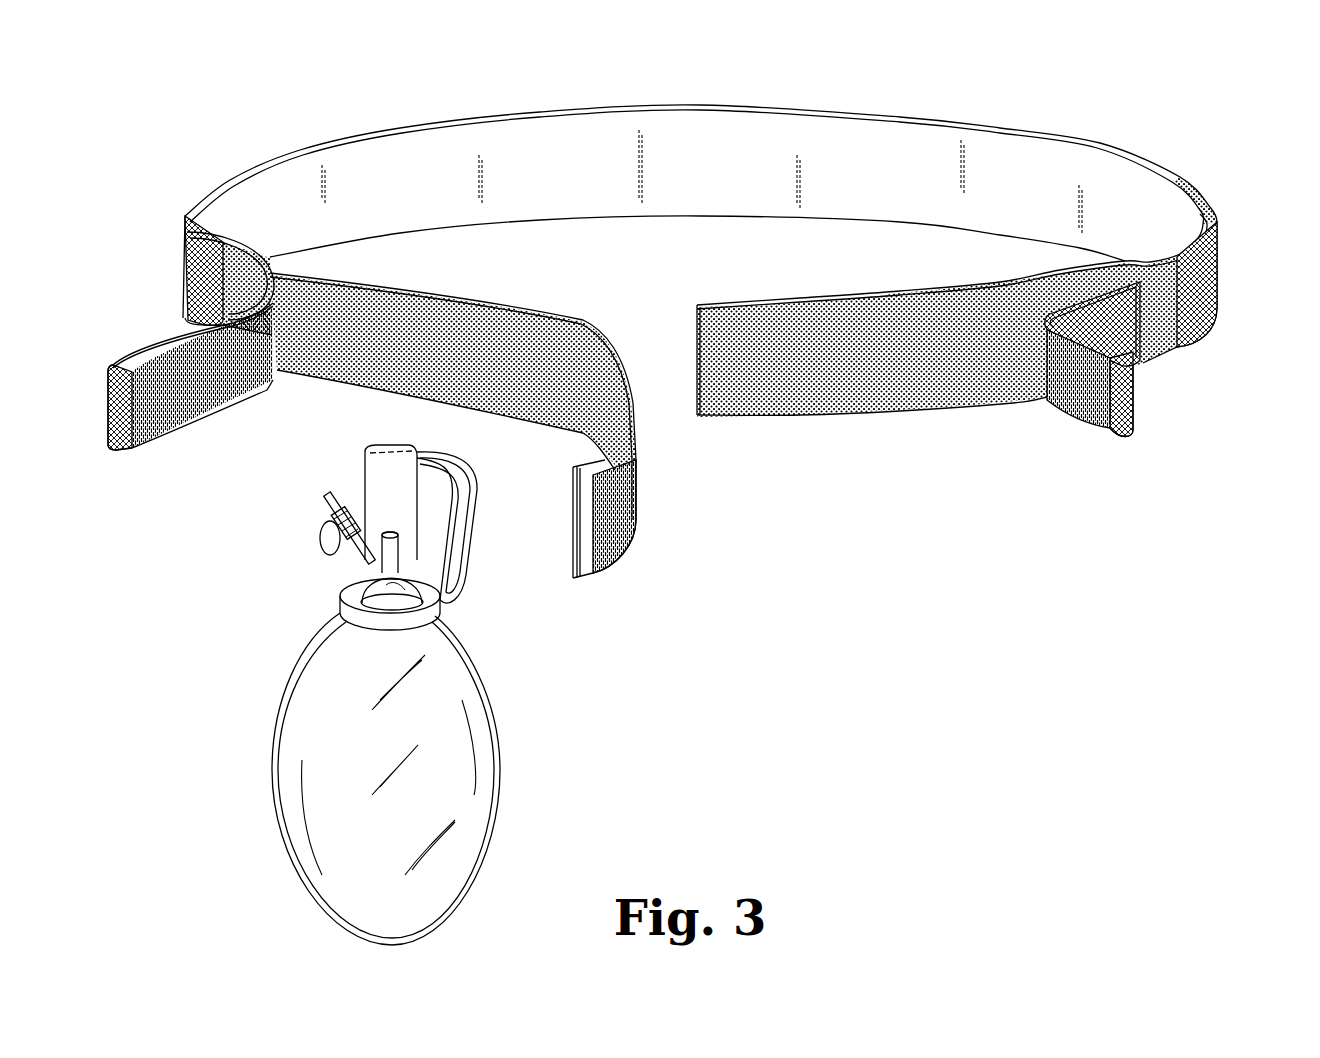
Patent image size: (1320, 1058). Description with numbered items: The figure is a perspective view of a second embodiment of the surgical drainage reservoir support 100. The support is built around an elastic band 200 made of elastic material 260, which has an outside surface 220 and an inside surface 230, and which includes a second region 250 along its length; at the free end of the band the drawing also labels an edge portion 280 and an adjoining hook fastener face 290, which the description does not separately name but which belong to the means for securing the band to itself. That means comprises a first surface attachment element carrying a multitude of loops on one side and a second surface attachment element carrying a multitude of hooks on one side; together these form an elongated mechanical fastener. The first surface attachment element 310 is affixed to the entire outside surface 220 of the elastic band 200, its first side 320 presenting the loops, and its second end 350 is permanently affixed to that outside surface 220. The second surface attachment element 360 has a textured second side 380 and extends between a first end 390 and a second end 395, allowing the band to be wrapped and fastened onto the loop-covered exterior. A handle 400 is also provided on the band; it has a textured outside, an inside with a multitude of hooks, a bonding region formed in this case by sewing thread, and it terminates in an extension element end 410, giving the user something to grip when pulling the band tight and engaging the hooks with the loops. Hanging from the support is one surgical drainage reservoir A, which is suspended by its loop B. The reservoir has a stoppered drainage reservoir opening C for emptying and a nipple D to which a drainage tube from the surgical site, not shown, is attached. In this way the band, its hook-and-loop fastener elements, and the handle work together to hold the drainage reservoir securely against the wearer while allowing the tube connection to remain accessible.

The surgical drainage reservoir support 100 is at (1155, 82).
The elastic band 200 is at (1148, 200).
The outside surface 220 is at (895, 400).
The inside surface 230 is at (755, 150).
The second region 250 is at (697, 415).
The elastic material 260 is at (578, 575).
The edge of second end 280 is at (625, 562).
The hook fastener portion 290 is at (640, 513).
The first surface attachment element 310 is at (362, 305).
The first side 320 is at (957, 297).
The second end 350 is at (133, 333).
The second surface attachment element 360 is at (272, 258).
The second side 380 is at (1197, 284).
The first end 390 is at (202, 240).
The second end 395 is at (120, 366).
The handle 400 is at (110, 410).
The extension element end 410 is at (122, 455).
The surgical drainage reservoir A is at (333, 724).
The loop B is at (380, 474).
The stoppered drainage reservoir opening C is at (320, 540).
The nipple D is at (456, 572).